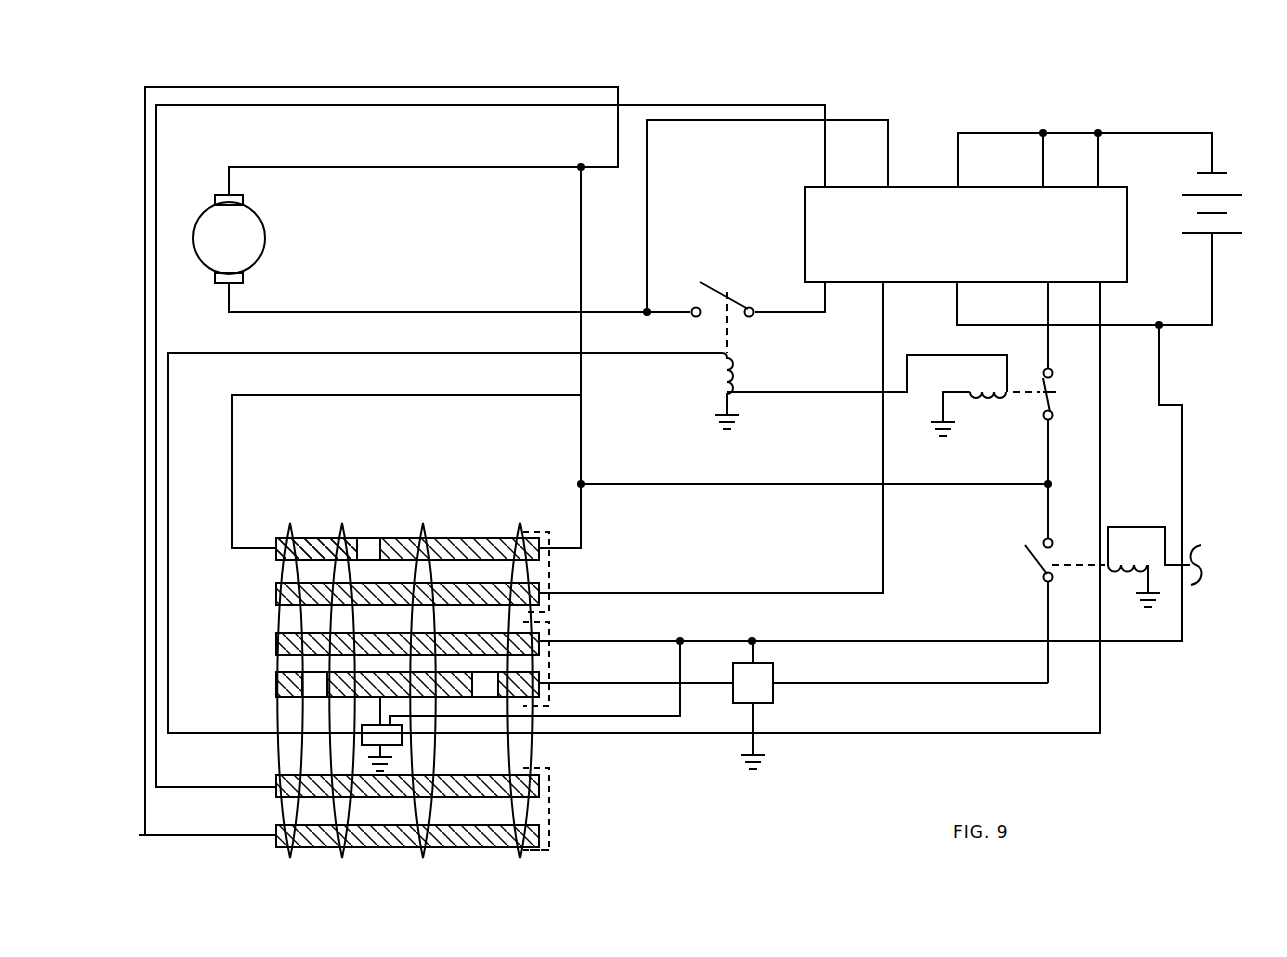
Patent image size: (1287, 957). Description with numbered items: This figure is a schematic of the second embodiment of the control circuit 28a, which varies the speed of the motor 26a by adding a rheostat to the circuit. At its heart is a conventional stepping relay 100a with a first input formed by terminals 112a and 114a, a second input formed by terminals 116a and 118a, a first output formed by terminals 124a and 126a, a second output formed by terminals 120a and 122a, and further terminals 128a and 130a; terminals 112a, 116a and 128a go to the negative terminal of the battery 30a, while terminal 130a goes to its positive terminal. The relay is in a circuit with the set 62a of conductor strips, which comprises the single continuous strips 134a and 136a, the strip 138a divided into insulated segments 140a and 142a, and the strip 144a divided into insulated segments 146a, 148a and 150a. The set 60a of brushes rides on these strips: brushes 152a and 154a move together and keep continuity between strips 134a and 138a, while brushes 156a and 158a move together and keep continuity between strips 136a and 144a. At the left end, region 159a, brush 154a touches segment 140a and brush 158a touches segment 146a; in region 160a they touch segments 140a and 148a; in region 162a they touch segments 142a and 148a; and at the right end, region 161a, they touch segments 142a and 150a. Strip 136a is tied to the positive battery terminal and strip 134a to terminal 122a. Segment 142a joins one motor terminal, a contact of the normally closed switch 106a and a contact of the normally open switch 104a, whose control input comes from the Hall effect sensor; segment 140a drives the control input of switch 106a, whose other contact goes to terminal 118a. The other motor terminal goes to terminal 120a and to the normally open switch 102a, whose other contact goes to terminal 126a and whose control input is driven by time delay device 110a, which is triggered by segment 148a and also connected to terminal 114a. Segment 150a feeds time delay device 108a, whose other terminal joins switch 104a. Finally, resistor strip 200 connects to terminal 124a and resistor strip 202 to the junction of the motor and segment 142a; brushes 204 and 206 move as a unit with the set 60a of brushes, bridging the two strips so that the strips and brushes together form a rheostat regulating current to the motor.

The motor 26a is at (243, 236).
The control circuit 28a is at (1152, 104).
The battery 30a is at (1190, 214).
The set of brushes 60a is at (544, 486).
The set of conductor strips 62a is at (270, 864).
The stepping relay 100a is at (921, 187).
The relay switch 102a is at (735, 320).
The relay switch 104a is at (1040, 566).
The relay switch 106a is at (1040, 398).
The time delay device 108a is at (773, 698).
The time delay device 110a is at (410, 740).
The relay terminal 112a is at (1101, 187).
The relay terminal 114a is at (1101, 285).
The relay terminal 116a is at (1044, 187).
The relay terminal 118a is at (1044, 314).
The relay terminal 120a is at (883, 187).
The relay terminal 122a is at (883, 285).
The relay terminal 124a is at (829, 187).
The relay terminal 126a is at (829, 285).
The relay terminal 128a is at (963, 187).
The relay terminal 130a is at (963, 285).
The conductor strip 134a is at (265, 595).
The conductor strip 136a is at (265, 641).
The conductor strip 138a is at (265, 551).
The segment 140a is at (311, 538).
The segment 142a is at (470, 537).
The conductor strip 144a is at (265, 682).
The segment 146a is at (278, 697).
The segment 148a is at (408, 697).
The segment 150a is at (542, 698).
The brush 152a is at (545, 590).
The brush 154a is at (545, 544).
The brush 156a is at (545, 638).
The brush 158a is at (545, 680).
The region 159a is at (288, 523).
The region 160a is at (343, 523).
The region 161a is at (527, 525).
The region 162a is at (437, 506).
The resistor strip 200 is at (265, 795).
The resistor strip 202 is at (265, 845).
The brush 204 is at (548, 786).
The brush 206 is at (548, 837).